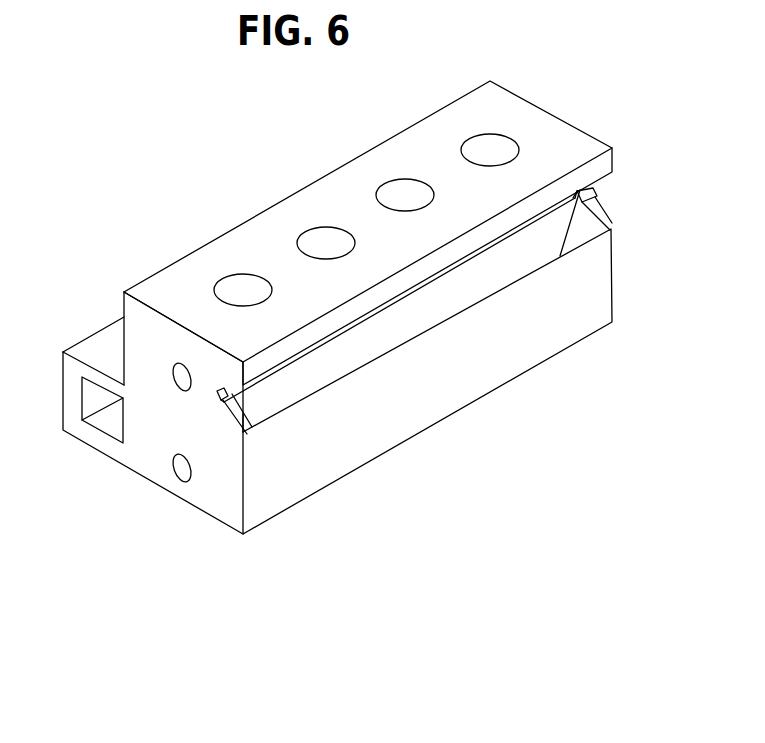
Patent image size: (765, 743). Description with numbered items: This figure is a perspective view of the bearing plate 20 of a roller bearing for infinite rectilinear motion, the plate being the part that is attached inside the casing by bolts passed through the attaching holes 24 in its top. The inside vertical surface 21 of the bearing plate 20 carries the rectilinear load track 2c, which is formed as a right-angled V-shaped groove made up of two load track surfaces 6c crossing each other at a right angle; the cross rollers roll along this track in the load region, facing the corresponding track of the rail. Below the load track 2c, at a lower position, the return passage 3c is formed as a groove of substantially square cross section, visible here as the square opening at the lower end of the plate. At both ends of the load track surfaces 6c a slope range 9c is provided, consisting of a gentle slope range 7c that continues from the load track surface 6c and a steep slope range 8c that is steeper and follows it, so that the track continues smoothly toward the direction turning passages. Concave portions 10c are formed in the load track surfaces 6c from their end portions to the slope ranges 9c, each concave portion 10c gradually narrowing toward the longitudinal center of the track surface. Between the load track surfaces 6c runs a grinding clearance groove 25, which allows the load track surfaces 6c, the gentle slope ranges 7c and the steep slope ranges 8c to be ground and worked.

The bearing plate 20 is at (352, 156).
The attaching holes 24 is at (492, 148).
The grinding clearance groove 25 is at (574, 196).
The inside vertical surface 21 is at (418, 413).
The return passage 3c is at (112, 427).
The load track surface 6c is at (322, 378).
The rectilinear load track 2c is at (472, 280).
The steep slope range 8c is at (600, 192).
The gentle slope range 7c is at (603, 207).
The slope range 9c is at (692, 172).
The concave portion 10c is at (583, 228).